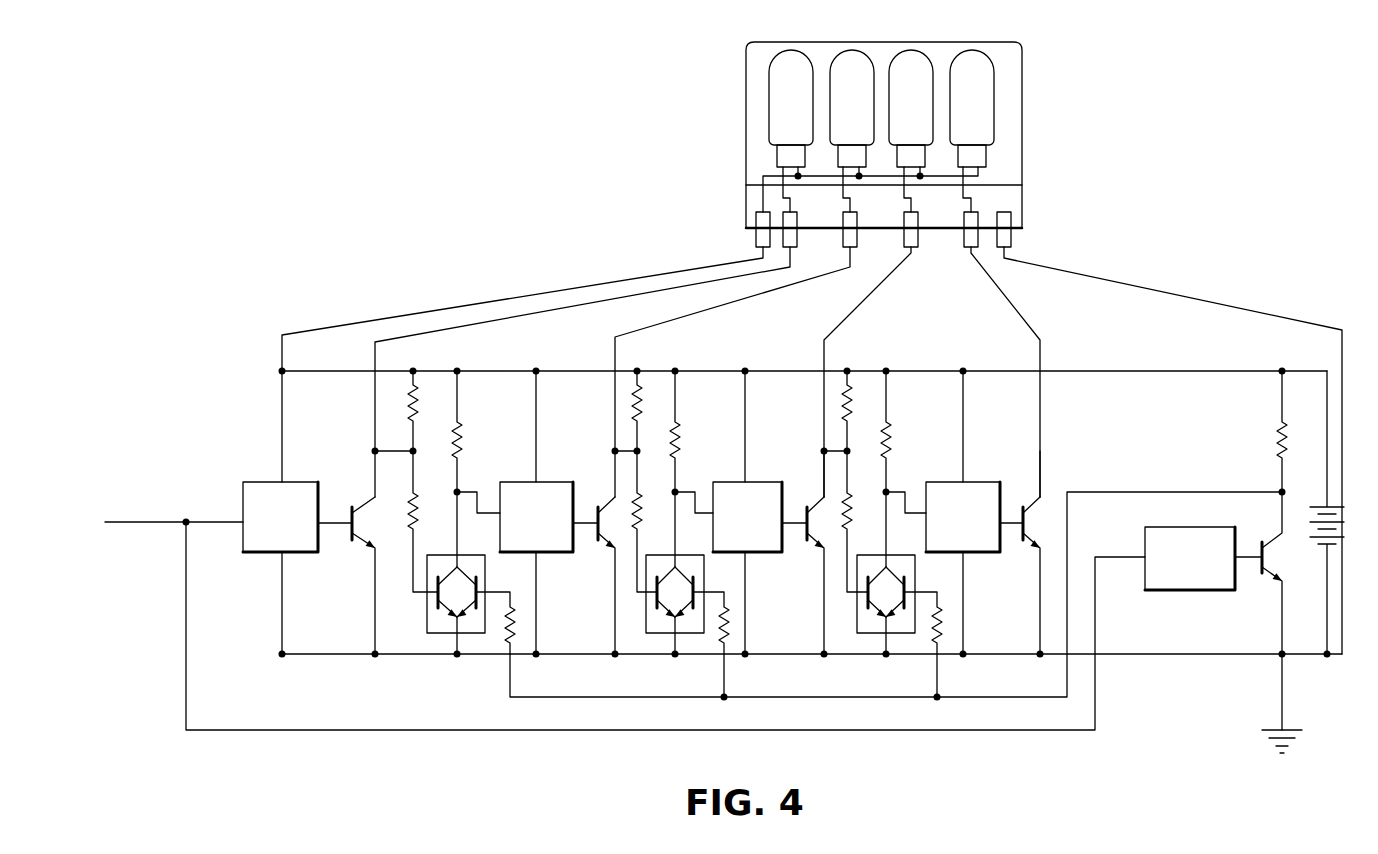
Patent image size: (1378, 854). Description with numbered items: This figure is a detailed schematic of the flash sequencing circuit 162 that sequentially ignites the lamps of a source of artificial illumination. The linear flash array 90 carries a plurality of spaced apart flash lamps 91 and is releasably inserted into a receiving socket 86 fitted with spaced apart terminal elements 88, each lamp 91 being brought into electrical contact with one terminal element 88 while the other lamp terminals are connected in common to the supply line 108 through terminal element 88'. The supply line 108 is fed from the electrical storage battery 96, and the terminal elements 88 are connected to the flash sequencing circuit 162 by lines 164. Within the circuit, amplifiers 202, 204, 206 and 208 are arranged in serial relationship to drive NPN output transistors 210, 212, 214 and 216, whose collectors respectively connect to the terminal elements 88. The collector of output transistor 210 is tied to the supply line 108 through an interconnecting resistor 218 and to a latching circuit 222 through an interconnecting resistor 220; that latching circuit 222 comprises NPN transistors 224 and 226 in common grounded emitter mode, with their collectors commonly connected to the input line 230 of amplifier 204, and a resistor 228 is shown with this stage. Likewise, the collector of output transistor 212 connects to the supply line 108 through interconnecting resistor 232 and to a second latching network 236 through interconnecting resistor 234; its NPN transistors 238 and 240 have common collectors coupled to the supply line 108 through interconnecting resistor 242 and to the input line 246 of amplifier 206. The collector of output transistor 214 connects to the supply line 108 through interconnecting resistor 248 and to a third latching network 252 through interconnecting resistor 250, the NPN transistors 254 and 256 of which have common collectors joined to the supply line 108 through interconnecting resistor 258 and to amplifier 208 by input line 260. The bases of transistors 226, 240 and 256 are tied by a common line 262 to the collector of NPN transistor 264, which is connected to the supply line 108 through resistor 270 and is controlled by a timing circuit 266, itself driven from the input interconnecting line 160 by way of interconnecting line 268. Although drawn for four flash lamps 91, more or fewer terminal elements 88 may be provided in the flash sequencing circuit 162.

The receiving socket 86 is at (750, 222).
The terminal elements 88 is at (910, 256).
The terminal element 88' is at (724, 232).
The linear flash array 90 is at (1035, 98).
The flash lamps 91 is at (997, 72).
The electrical storage battery 96 is at (1318, 502).
The supply line 108 is at (1125, 372).
The interconnecting line 160 is at (160, 520).
The flash sequencing circuit 162 is at (418, 737).
The lines 164 is at (823, 420).
The amplifier 202 is at (290, 553).
The amplifier 204 is at (540, 556).
The amplifier 206 is at (752, 556).
The amplifier 208 is at (990, 556).
The output transistor 210 is at (365, 500).
The output transistor 212 is at (606, 496).
The output transistor 214 is at (818, 496).
The output transistor 216 is at (1028, 496).
The interconnecting resistor 218 is at (410, 405).
The interconnecting resistor 220 is at (403, 521).
The latching circuit 222 is at (443, 634).
The NPN transistor 224 is at (437, 603).
The NPN transistor 226 is at (477, 582).
The resistor 228 is at (465, 437).
The input line 230 is at (459, 490).
The interconnecting resistor 232 is at (634, 405).
The interconnecting resistor 234 is at (625, 548).
The second latching network 236 is at (660, 634).
The NPN transistor 238 is at (656, 612).
The NPN transistor 240 is at (694, 582).
The interconnecting resistor 242 is at (678, 438).
The input line 246 is at (676, 490).
The interconnecting resistor 248 is at (844, 405).
The interconnecting resistor 250 is at (838, 550).
The third latching network 252 is at (872, 634).
The NPN transistor 254 is at (867, 612).
The NPN transistor 256 is at (905, 582).
The interconnecting resistor 258 is at (889, 438).
The input line 260 is at (887, 490).
The common line 262 is at (1138, 492).
The NPN transistor 264 is at (1272, 580).
The timing circuit 266 is at (1172, 592).
The interconnecting line 268 is at (1096, 694).
The resistor 270 is at (1280, 432).